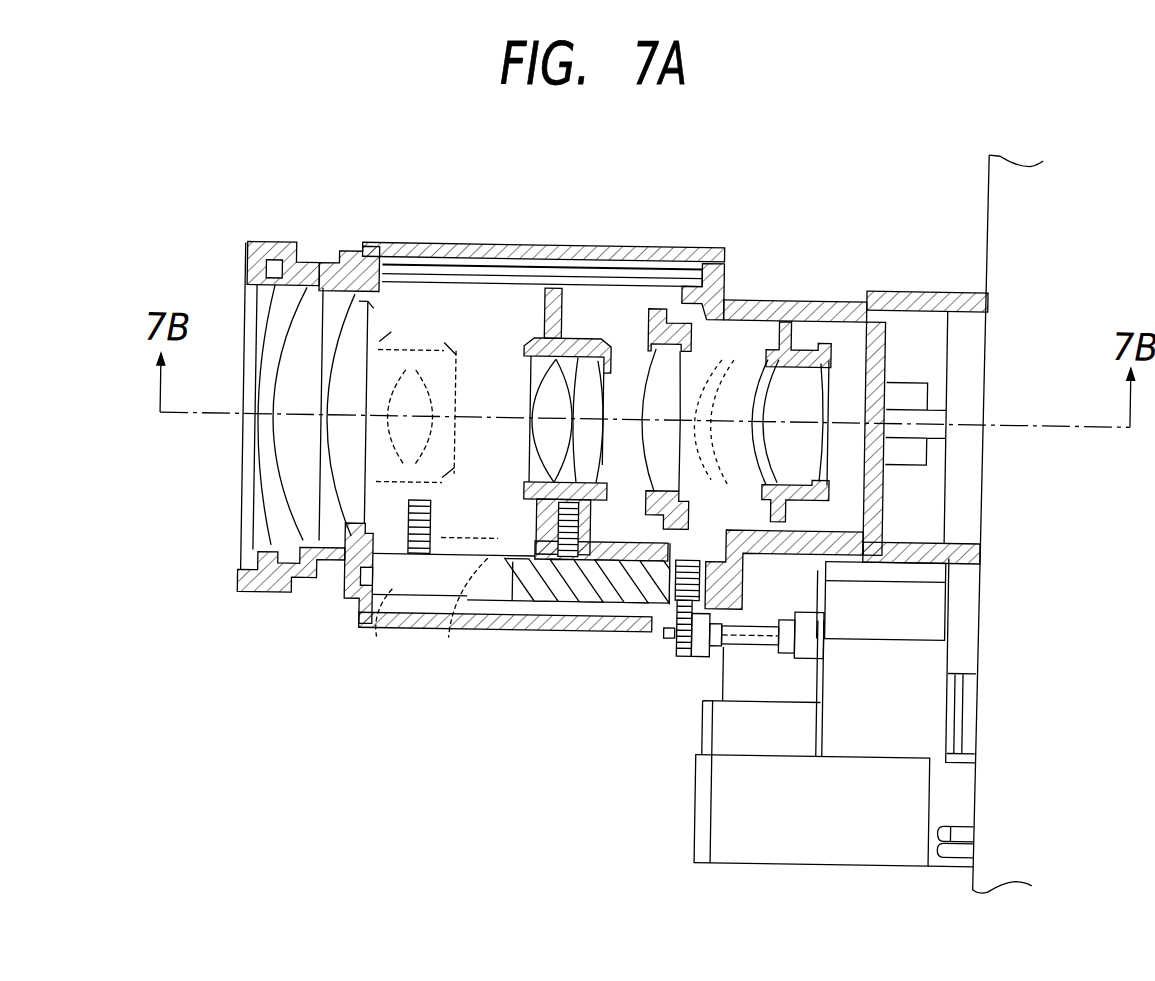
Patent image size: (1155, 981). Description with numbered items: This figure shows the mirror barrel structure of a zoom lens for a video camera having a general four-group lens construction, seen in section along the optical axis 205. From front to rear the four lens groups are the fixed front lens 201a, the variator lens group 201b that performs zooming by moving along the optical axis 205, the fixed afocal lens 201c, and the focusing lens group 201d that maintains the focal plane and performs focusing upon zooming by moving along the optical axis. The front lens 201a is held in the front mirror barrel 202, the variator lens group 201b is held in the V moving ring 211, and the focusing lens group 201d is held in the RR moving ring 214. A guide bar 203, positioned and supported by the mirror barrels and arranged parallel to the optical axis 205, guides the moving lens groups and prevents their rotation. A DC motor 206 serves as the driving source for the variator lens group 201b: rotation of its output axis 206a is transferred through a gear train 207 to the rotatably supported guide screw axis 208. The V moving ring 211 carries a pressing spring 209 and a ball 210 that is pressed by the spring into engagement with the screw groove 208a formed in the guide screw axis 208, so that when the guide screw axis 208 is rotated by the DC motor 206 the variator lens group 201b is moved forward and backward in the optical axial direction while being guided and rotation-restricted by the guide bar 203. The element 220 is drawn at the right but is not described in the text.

The front lens 201a is at (269, 254).
The variator lens group 201b is at (609, 385).
The afocal lens 201c is at (713, 330).
The focusing lens group 201d is at (805, 340).
The front mirror barrel 202 is at (397, 247).
The guide bar 203 is at (660, 245).
The optical axis 205 is at (1040, 435).
The DC motor 206 is at (710, 833).
The output axis 206a is at (753, 645).
The gear train 207 is at (677, 672).
The guide screw axis 208 is at (381, 632).
The screw groove 208a is at (609, 567).
The pressing spring 209 is at (531, 529).
The ball 210 is at (561, 520).
The V moving ring 211 is at (536, 262).
The RR moving ring 214 is at (786, 320).
The camera body wall 220 is at (983, 198).